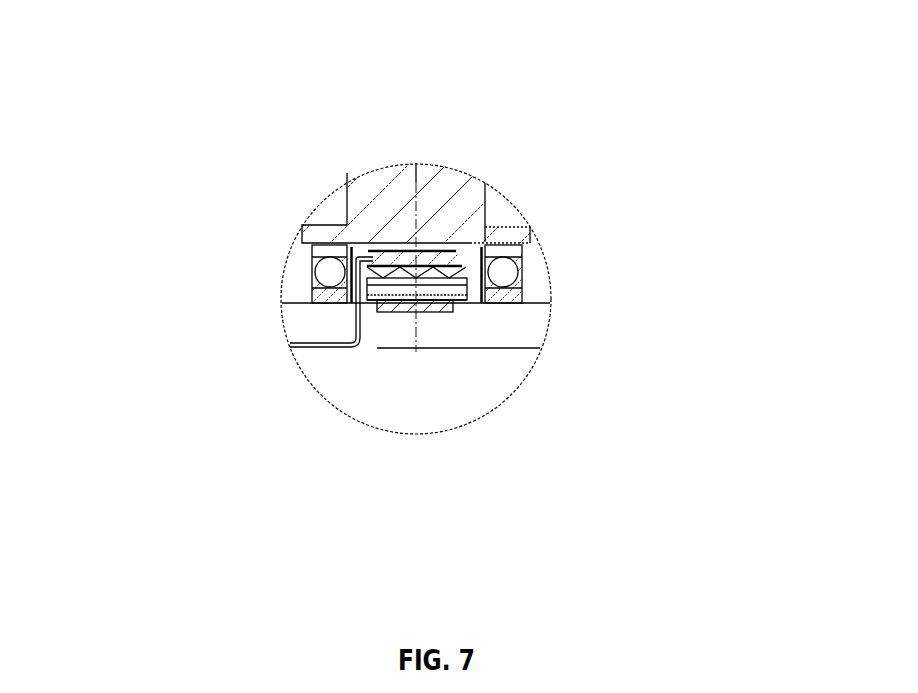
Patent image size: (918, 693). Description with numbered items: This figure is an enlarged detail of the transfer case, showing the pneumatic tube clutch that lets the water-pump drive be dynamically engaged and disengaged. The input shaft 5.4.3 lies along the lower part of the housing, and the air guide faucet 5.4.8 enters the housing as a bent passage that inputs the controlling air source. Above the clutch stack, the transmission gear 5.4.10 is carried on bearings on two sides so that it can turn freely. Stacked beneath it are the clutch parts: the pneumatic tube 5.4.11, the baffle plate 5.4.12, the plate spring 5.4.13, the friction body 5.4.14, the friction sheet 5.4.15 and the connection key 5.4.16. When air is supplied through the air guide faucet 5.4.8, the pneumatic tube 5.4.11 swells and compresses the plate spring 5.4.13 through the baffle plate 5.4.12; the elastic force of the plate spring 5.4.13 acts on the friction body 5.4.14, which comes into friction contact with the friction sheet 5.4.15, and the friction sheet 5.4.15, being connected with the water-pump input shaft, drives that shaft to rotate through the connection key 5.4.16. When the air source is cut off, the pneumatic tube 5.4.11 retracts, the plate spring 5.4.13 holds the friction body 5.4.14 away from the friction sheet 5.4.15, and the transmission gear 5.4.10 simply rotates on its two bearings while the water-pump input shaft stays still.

The input shaft 5.4.3 is at (293, 325).
The air guide faucet 5.4.8 is at (288, 350).
The transmission gear 5.4.10 is at (462, 205).
The pneumatic tube 5.4.11 is at (458, 250).
The baffle plate 5.4.12 is at (460, 264).
The plate spring 5.4.13 is at (465, 278).
The friction body 5.4.14 is at (463, 300).
The friction sheet 5.4.15 is at (468, 302).
The connection key 5.4.16 is at (420, 312).